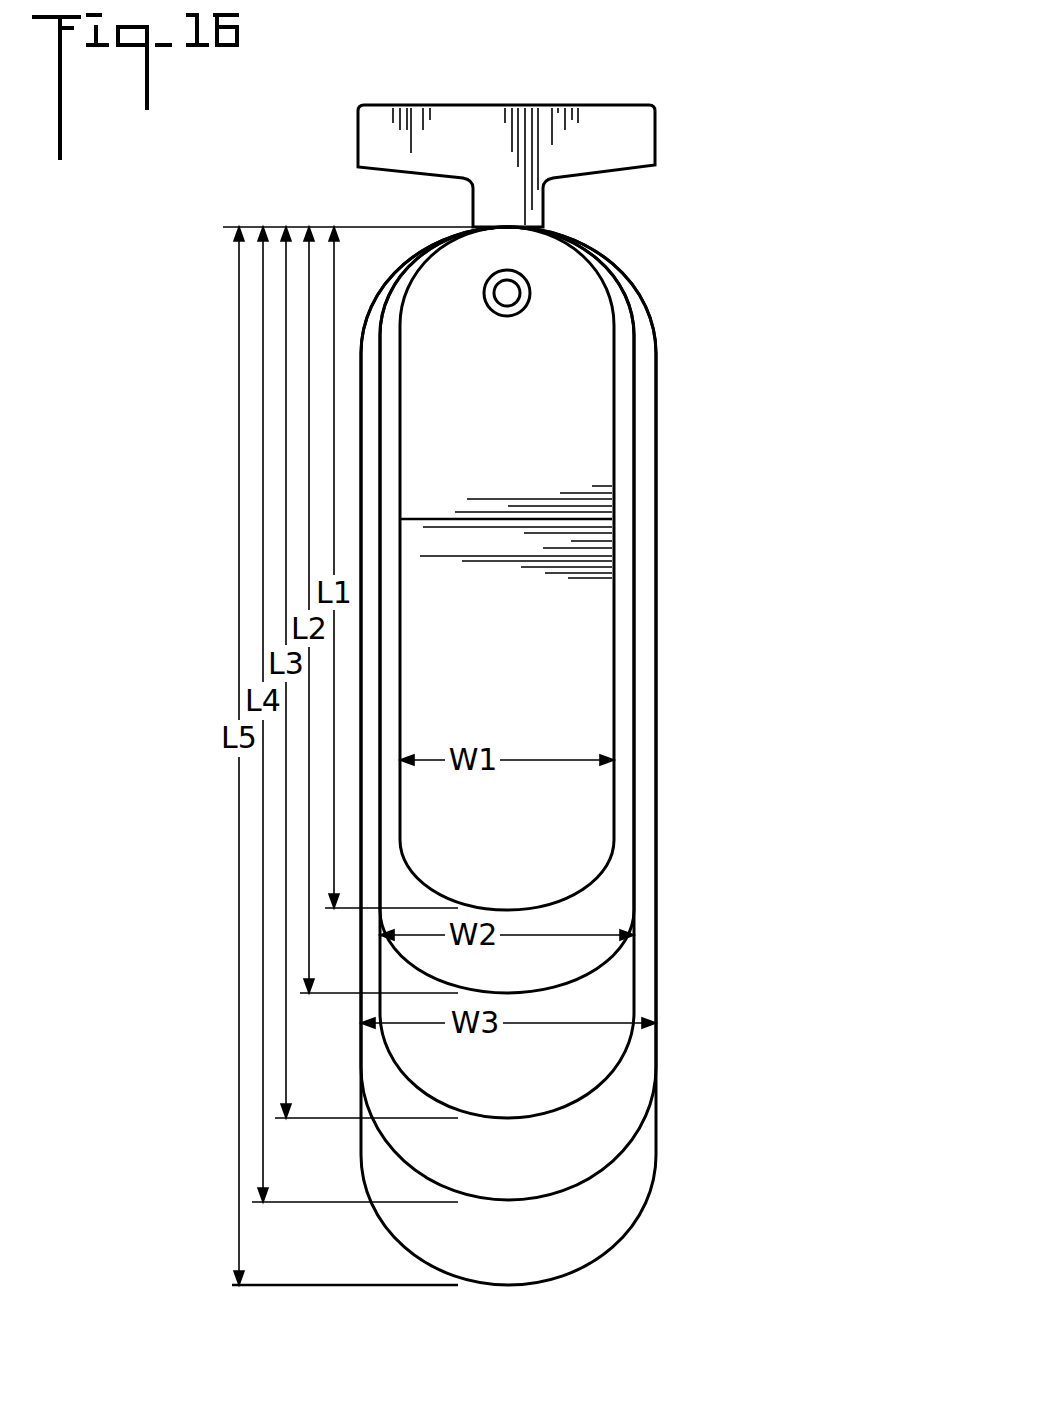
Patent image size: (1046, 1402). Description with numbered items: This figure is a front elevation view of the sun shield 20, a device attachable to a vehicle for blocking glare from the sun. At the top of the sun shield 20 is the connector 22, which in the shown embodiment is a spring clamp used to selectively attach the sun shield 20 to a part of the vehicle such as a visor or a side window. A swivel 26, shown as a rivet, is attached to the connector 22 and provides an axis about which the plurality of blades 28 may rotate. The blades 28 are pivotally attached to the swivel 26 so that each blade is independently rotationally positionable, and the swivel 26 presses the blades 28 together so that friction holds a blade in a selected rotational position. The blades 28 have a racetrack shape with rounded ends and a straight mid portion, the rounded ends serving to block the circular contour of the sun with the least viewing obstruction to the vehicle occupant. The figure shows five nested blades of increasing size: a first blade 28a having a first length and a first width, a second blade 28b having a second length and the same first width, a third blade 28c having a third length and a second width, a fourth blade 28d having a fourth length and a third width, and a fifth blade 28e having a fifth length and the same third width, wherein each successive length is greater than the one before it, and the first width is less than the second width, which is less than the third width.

The sun shield 20 is at (662, 83).
The connector 22 is at (375, 130).
The swivel 26 is at (512, 292).
The plurality of blades 28 is at (688, 583).
The first blade 28a is at (573, 862).
The second blade 28b is at (556, 968).
The third blade 28c is at (587, 1072).
The fourth blade 28d is at (578, 1160).
The fifth blade 28e is at (578, 1245).